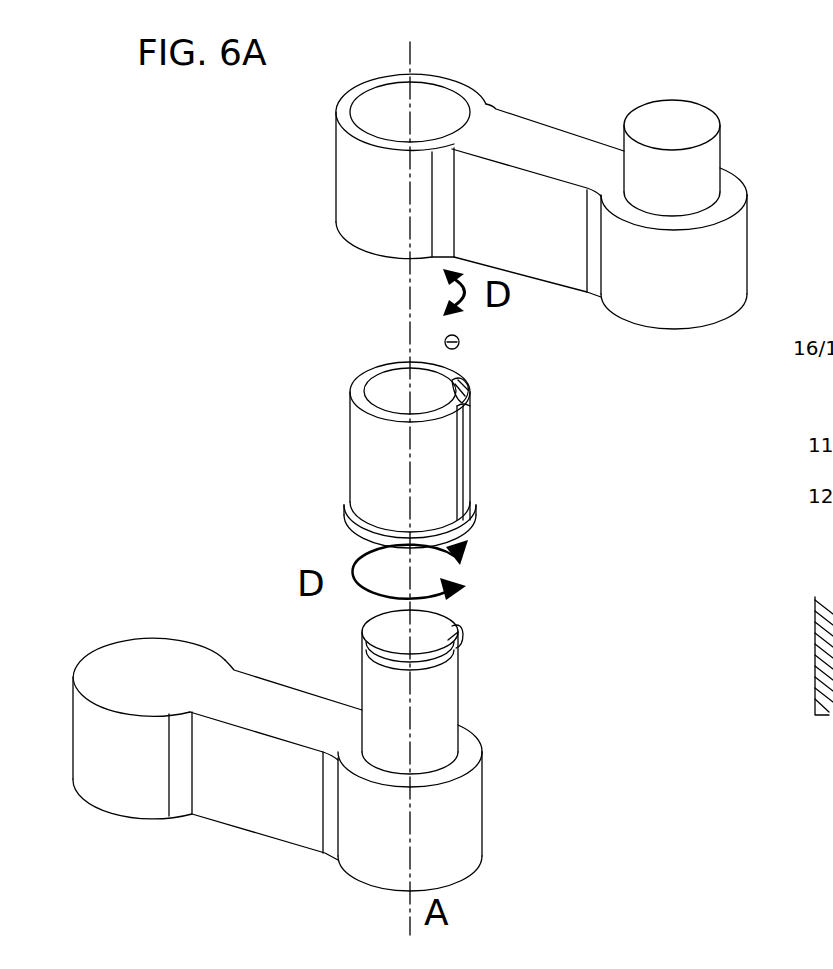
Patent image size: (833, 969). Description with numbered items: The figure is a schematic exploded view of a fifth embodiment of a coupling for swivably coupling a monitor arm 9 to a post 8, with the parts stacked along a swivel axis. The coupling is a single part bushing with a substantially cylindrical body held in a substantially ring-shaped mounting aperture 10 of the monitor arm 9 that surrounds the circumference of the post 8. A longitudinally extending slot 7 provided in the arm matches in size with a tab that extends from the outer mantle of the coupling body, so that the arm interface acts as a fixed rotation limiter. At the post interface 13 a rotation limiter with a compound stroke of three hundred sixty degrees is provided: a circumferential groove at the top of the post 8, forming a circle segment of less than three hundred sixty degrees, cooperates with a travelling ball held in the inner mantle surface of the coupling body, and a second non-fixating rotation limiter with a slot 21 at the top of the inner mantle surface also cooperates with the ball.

The longitudinally extending slot 7 is at (465, 130).
The mounting aperture of monitor arm 10 is at (377, 121).
The post embodied as coupling post 8 is at (682, 162).
The monitor arm 9 is at (692, 265).
The post interface of coupling 13 is at (385, 387).
The slot of traveler 21 is at (473, 392).